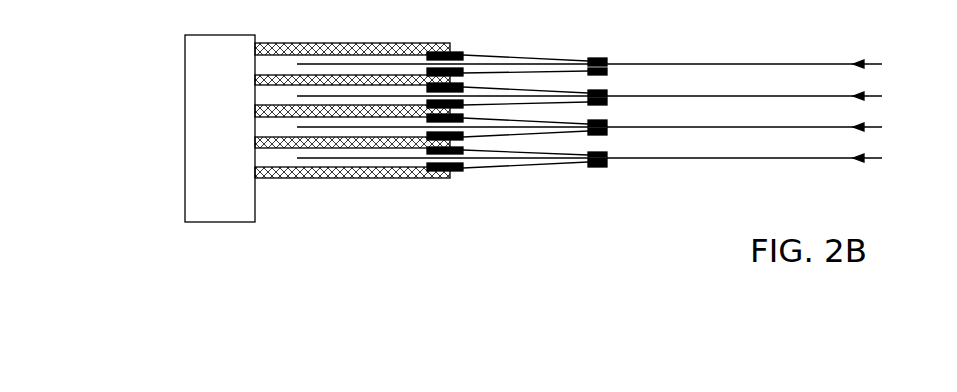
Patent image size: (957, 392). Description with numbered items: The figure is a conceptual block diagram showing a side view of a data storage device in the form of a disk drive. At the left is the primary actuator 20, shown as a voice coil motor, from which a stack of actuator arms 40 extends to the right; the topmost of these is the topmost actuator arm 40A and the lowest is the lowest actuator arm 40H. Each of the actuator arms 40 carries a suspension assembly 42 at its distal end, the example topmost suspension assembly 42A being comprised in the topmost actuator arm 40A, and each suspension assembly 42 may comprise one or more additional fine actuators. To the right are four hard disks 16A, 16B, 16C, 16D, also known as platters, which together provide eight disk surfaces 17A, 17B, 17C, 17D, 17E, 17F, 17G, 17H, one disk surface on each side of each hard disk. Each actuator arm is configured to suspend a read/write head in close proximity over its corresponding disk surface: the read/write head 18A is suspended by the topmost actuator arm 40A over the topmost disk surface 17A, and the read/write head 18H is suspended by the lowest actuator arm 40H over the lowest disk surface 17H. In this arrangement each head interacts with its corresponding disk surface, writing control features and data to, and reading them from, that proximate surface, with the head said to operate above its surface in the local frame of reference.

The primary actuator 20 is at (185, 70).
The actuator arms 40 is at (352, 130).
The topmost actuator arm 40A is at (371, 43).
The lowest actuator arm 40H is at (321, 178).
The suspension assembly 42 is at (521, 131).
The topmost suspension assembly 42A is at (546, 47).
The hard disk 16A is at (606, 65).
The hard disk 16B is at (605, 97).
The hard disk 16C is at (605, 128).
The hard disk 16D is at (606, 159).
The disk surface 17A is at (762, 64).
The disk surface 17B is at (748, 66).
The disk surface 17C is at (763, 96).
The disk surface 17D is at (748, 98).
The disk surface 17E is at (750, 127).
The disk surface 17F is at (735, 129).
The disk surface 17G is at (748, 158).
The disk surface 17H is at (735, 160).
The read/write head 18A is at (616, 51).
The read/write head 18H is at (617, 176).